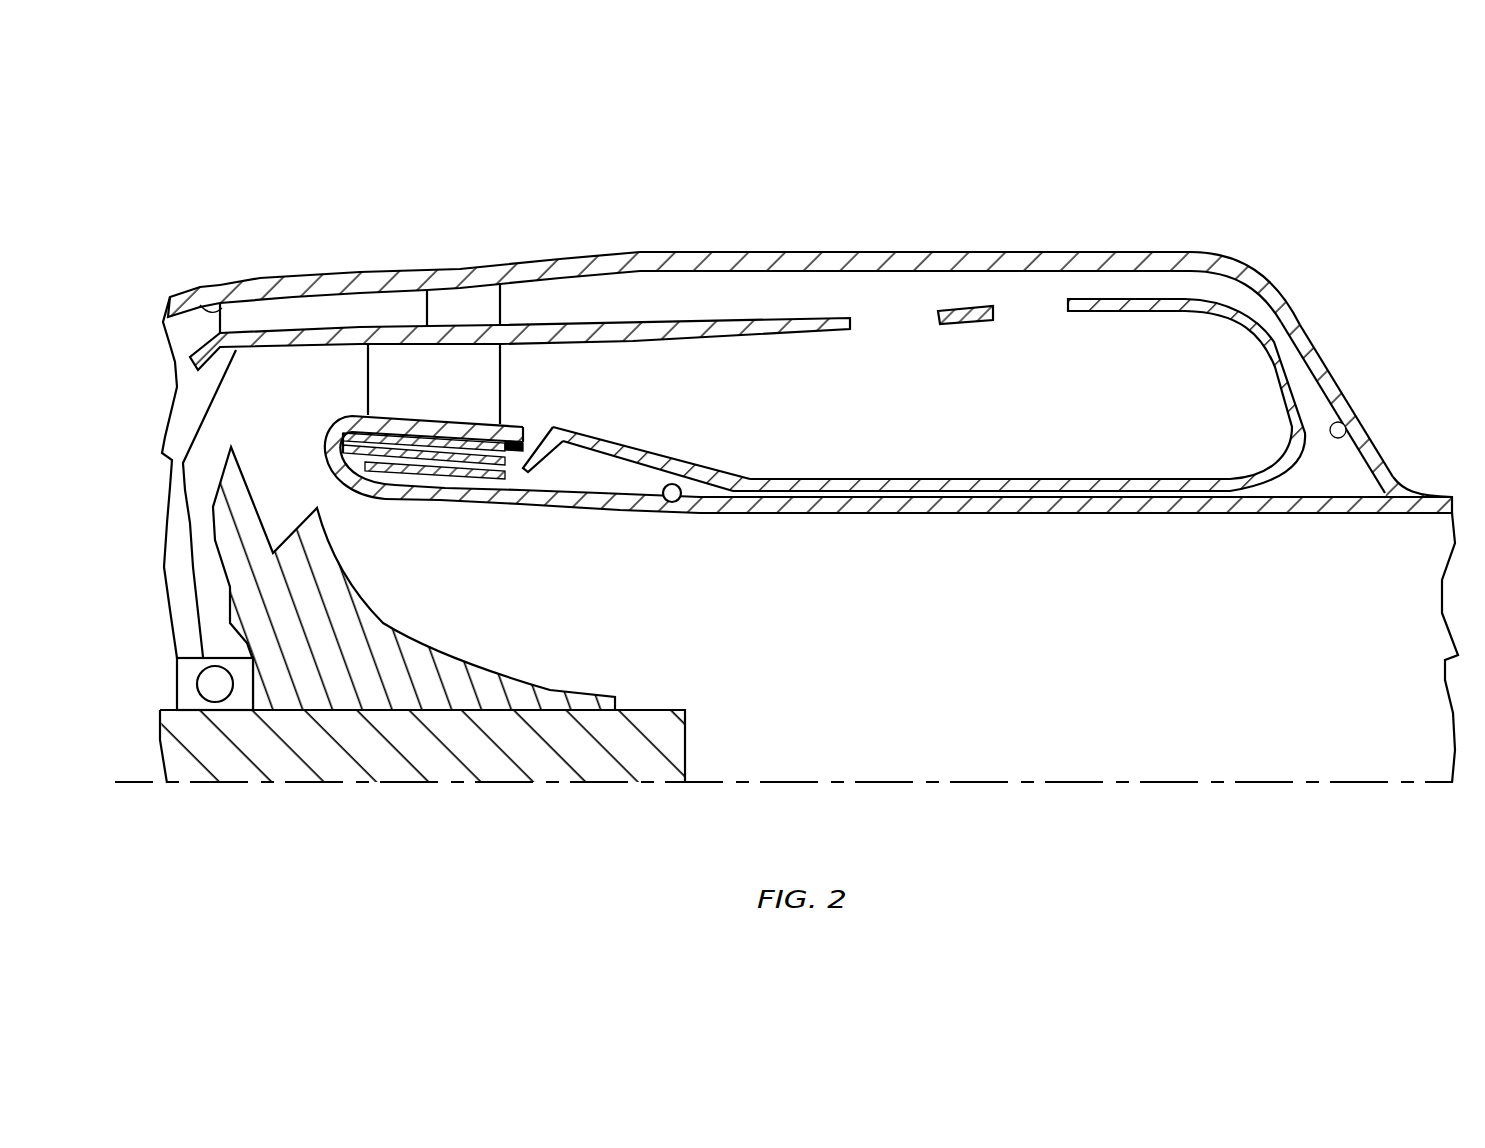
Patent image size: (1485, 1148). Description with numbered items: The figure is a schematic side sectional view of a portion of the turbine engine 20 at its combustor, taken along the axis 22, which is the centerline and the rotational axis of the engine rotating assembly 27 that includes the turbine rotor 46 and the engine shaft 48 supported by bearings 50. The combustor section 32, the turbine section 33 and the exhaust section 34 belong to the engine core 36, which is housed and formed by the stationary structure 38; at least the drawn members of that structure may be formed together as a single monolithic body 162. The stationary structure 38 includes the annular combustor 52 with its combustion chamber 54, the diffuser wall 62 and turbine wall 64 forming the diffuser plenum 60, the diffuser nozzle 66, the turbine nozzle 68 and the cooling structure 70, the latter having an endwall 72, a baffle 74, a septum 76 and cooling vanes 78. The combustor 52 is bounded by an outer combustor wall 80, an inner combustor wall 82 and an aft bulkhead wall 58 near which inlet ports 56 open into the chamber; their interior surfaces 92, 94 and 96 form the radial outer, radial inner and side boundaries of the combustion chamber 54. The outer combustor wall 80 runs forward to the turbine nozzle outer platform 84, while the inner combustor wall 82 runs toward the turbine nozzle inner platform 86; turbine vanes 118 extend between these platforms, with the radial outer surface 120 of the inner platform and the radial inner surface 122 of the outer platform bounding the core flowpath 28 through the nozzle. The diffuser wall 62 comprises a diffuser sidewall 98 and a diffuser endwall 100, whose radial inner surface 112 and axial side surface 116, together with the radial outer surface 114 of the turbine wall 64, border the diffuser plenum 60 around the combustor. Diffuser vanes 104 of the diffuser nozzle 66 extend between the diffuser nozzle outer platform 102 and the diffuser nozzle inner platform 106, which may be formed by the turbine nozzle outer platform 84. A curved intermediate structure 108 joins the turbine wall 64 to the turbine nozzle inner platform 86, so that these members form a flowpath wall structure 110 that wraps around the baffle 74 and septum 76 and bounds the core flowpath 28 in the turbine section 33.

The turbine engine 20 is at (172, 163).
The axis 22 is at (128, 792).
The engine rotating assembly 27 is at (573, 686).
The core flowpath 28 is at (824, 676).
The combustor section 32 is at (826, 240).
The turbine section 33 is at (193, 423).
The exhaust section 34 is at (1442, 478).
The core 36 is at (644, 222).
The stationary structure 38 is at (476, 258).
The turbine rotor 46 is at (448, 662).
The engine shaft 48 is at (686, 740).
The bearings 50 is at (177, 683).
The combustor 52 is at (728, 318).
The combustion chamber 54 is at (859, 426).
The inlet ports 56 is at (900, 318).
The bulkhead wall 58 is at (1302, 378).
The diffuser plenum 60 is at (614, 312).
The diffuser wall 62 is at (998, 253).
The turbine wall 64 is at (873, 517).
The diffuser nozzle 66 is at (212, 334).
The turbine nozzle 68 is at (350, 380).
The cooling structure 70 is at (545, 478).
The endwall 72 is at (580, 443).
The baffle 74 is at (440, 476).
The septum 76 is at (400, 474).
The cooling vanes 78 is at (510, 480).
The outer combustor wall 80 is at (777, 319).
The inner combustor wall 82 is at (762, 503).
The turbine nozzle outer platform 84 is at (500, 290).
The turbine nozzle inner platform 86 is at (500, 403).
The interior surface 92 is at (665, 340).
The interior surface 94 is at (762, 478).
The interior surface 96 is at (1283, 393).
The diffuser sidewall 98 is at (900, 253).
The diffuser endwall 100 is at (1314, 317).
The diffuser nozzle outer platform 102 is at (350, 273).
The diffuser vanes 104 is at (200, 306).
The diffuser nozzle inner platform 106 is at (298, 357).
The intermediate structure 108 is at (323, 457).
The flowpath wall structure 110 is at (258, 532).
The radial inner surface 112 is at (825, 273).
The radial outer surface 114 is at (672, 502).
The axial side surface 116 is at (1350, 432).
The turbine vanes 118 is at (500, 373).
The radial outer surface 120 is at (397, 408).
The radial inner surface 122 is at (397, 344).
The monolithic body 162 is at (875, 317).